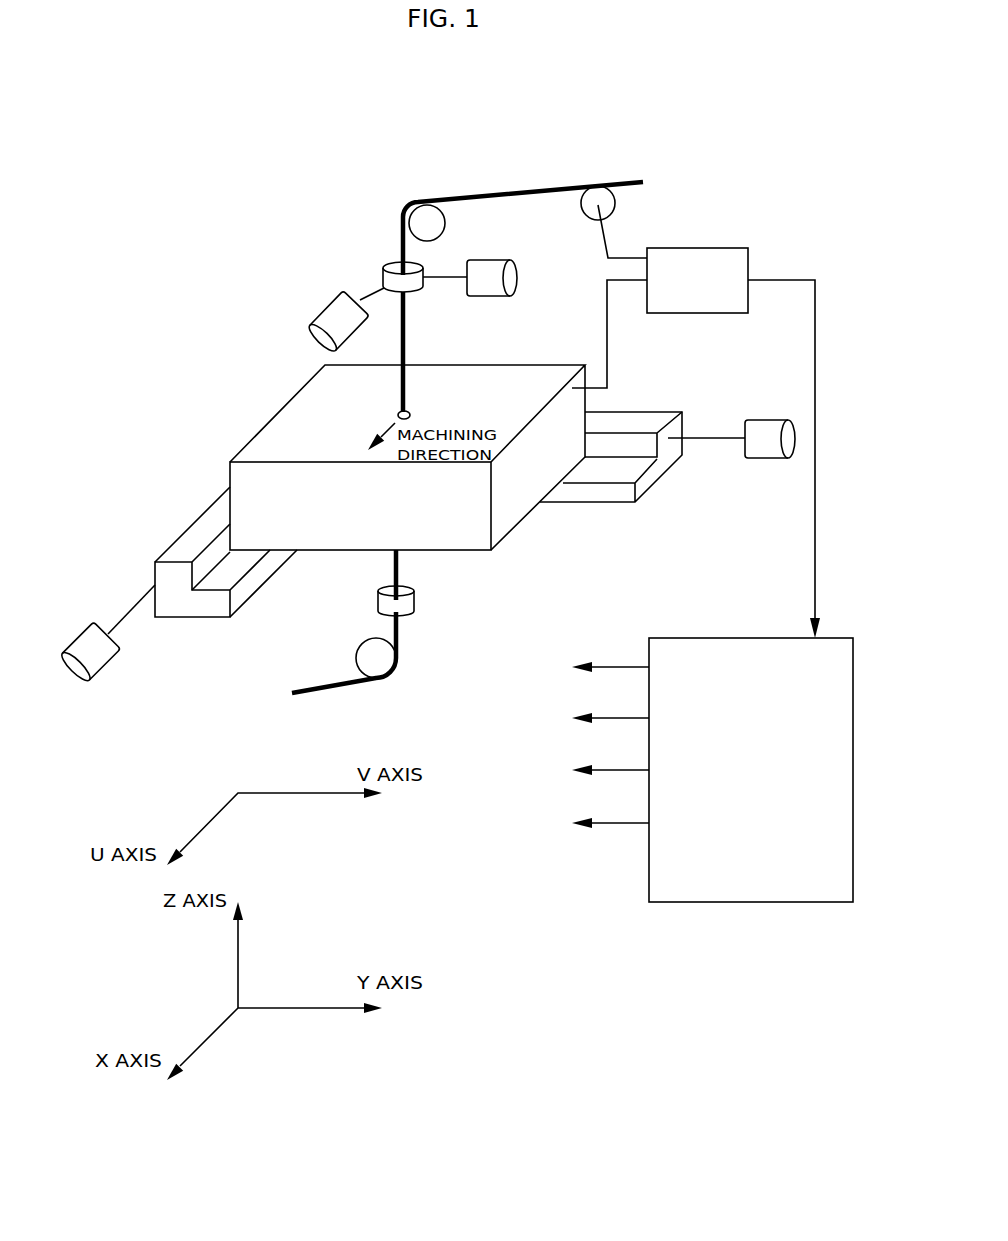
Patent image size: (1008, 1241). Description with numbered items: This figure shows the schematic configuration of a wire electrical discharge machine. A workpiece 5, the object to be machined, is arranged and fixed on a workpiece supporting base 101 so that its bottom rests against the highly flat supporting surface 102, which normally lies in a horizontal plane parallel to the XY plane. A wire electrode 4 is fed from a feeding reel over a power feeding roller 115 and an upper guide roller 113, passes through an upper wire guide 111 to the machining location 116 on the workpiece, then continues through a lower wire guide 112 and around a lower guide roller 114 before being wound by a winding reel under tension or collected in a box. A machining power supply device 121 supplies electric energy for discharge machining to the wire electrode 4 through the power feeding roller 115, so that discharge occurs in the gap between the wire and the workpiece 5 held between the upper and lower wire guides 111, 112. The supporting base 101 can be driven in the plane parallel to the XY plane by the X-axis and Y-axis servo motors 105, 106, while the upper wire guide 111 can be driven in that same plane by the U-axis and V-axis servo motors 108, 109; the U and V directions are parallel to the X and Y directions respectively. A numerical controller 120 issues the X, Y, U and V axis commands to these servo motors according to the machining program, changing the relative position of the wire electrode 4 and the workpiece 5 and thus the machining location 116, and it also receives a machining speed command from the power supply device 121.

The wire electrode 4 is at (497, 193).
The workpiece 5 is at (278, 480).
The workpiece supporting base 101 is at (652, 478).
The supporting surface 102 is at (616, 456).
The X-axis servo motor 105 is at (77, 632).
The Y-axis servo motor 106 is at (767, 420).
The U-axis servo motor 108 is at (337, 297).
The V-axis servo motor 109 is at (500, 259).
The upper wire guide 111 is at (385, 268).
The lower wire guide 112 is at (414, 603).
The upper guide roller 113 is at (443, 228).
The lower guide roller 114 is at (356, 660).
The power feeding roller 115 is at (615, 205).
The machining location 116 is at (376, 400).
The numerical controller 120 is at (753, 635).
The machining power supply device 121 is at (733, 248).